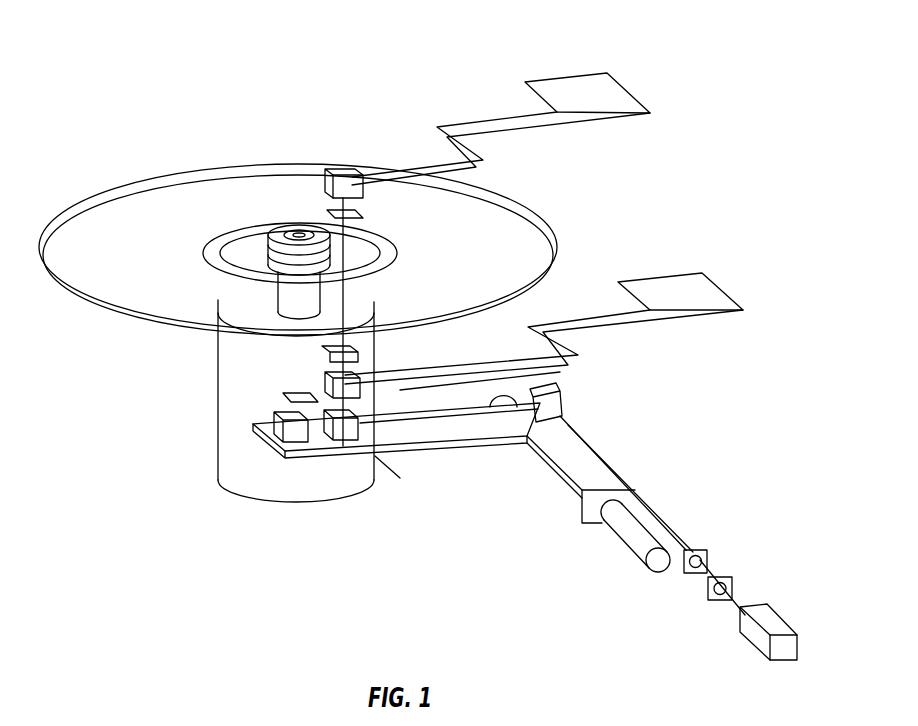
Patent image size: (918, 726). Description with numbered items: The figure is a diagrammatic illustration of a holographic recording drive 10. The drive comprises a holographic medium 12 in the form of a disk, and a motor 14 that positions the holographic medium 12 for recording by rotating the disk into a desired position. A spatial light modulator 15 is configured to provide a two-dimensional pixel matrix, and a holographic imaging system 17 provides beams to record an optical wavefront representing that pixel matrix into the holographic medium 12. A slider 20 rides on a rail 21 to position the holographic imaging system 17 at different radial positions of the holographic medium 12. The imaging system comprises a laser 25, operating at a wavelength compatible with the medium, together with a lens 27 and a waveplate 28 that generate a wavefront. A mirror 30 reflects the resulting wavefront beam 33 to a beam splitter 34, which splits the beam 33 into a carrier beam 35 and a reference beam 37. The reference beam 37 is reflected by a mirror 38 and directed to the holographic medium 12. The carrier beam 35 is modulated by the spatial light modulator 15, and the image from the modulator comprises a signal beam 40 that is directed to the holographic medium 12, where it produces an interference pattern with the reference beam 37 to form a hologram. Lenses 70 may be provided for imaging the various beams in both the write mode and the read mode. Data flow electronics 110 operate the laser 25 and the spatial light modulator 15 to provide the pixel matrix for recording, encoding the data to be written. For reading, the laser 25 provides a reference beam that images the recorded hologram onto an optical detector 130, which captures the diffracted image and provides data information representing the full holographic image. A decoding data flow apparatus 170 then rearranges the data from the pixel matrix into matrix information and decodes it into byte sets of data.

The holographic recording drive 10 is at (266, 50).
The holographic medium 12 is at (538, 220).
The motor 14 is at (215, 408).
The spatial light modulator 15 is at (402, 390).
The holographic imaging system 17 is at (695, 441).
The slider 20 is at (455, 445).
The rail 21 is at (632, 549).
The laser 25 is at (752, 645).
The lens 27 is at (736, 590).
The waveplate 28 is at (712, 562).
The mirror 30 is at (563, 396).
The wavefront beam 33 is at (400, 478).
The beam splitter 34 is at (347, 444).
The carrier beam 35 is at (366, 400).
The reference beam 37 is at (330, 442).
The mirror 38 is at (280, 441).
The signal beam 40 is at (362, 362).
The lenses 70 is at (267, 258).
The data flow electronics 110 is at (730, 284).
The optical detector 130 is at (341, 170).
The decoding data flow apparatus 170 is at (633, 87).